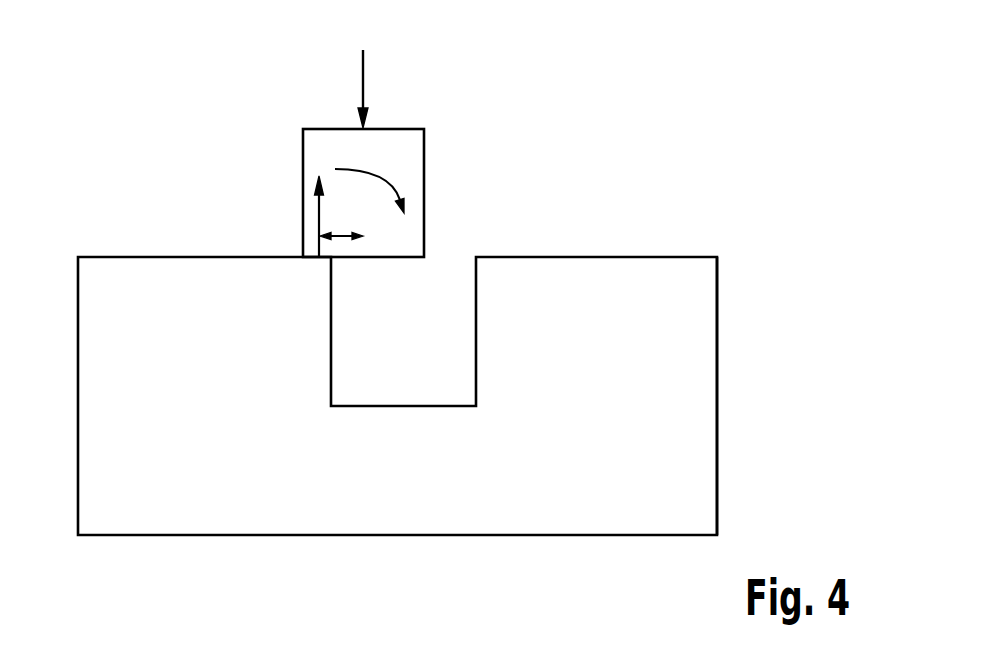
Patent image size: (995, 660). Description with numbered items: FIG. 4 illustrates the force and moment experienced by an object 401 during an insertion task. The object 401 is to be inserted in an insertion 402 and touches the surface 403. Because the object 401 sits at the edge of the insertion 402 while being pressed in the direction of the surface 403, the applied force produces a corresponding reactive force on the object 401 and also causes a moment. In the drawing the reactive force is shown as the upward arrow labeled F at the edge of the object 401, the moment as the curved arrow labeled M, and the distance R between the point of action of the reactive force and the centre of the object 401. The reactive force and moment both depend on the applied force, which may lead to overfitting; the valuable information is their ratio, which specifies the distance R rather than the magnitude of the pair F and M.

The object 401 is at (665, 257).
The insertion 402 is at (88, 185).
The surface 403 is at (768, 333).